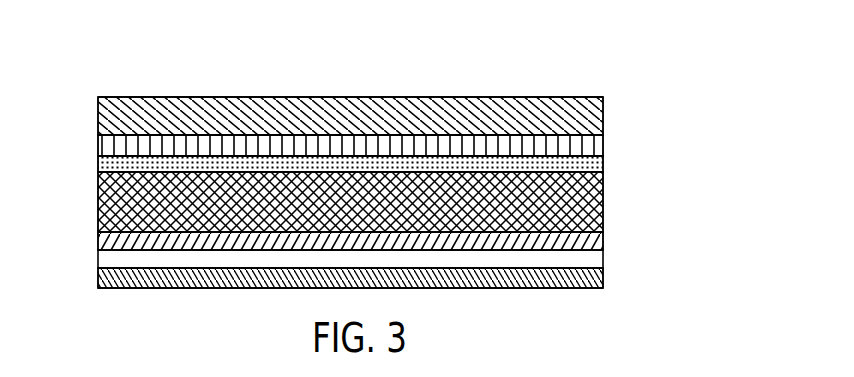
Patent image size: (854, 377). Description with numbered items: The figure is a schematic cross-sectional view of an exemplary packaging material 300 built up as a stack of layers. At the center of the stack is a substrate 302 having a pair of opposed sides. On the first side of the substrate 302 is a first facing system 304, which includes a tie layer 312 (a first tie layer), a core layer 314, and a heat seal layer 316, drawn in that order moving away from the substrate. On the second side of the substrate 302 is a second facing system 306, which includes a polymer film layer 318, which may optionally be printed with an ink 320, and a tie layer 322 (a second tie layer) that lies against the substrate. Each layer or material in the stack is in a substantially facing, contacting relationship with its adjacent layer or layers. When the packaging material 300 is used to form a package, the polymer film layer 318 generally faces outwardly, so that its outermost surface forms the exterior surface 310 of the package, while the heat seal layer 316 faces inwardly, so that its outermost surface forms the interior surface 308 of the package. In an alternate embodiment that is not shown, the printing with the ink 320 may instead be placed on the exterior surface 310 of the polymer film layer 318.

The packaging material 300 is at (704, 79).
The substrate 302 is at (603, 200).
The first facing system 304 is at (96, 232).
The second facing system 306 is at (96, 97).
The interior surface 308 is at (185, 289).
The exterior surface 310 is at (178, 97).
The tie layer 312 is at (603, 237).
The core layer 314 is at (603, 258).
The heat seal layer 316 is at (603, 281).
The polymer film layer 318 is at (603, 108).
The ink 320 is at (603, 141).
The tie layer 322 is at (603, 160).